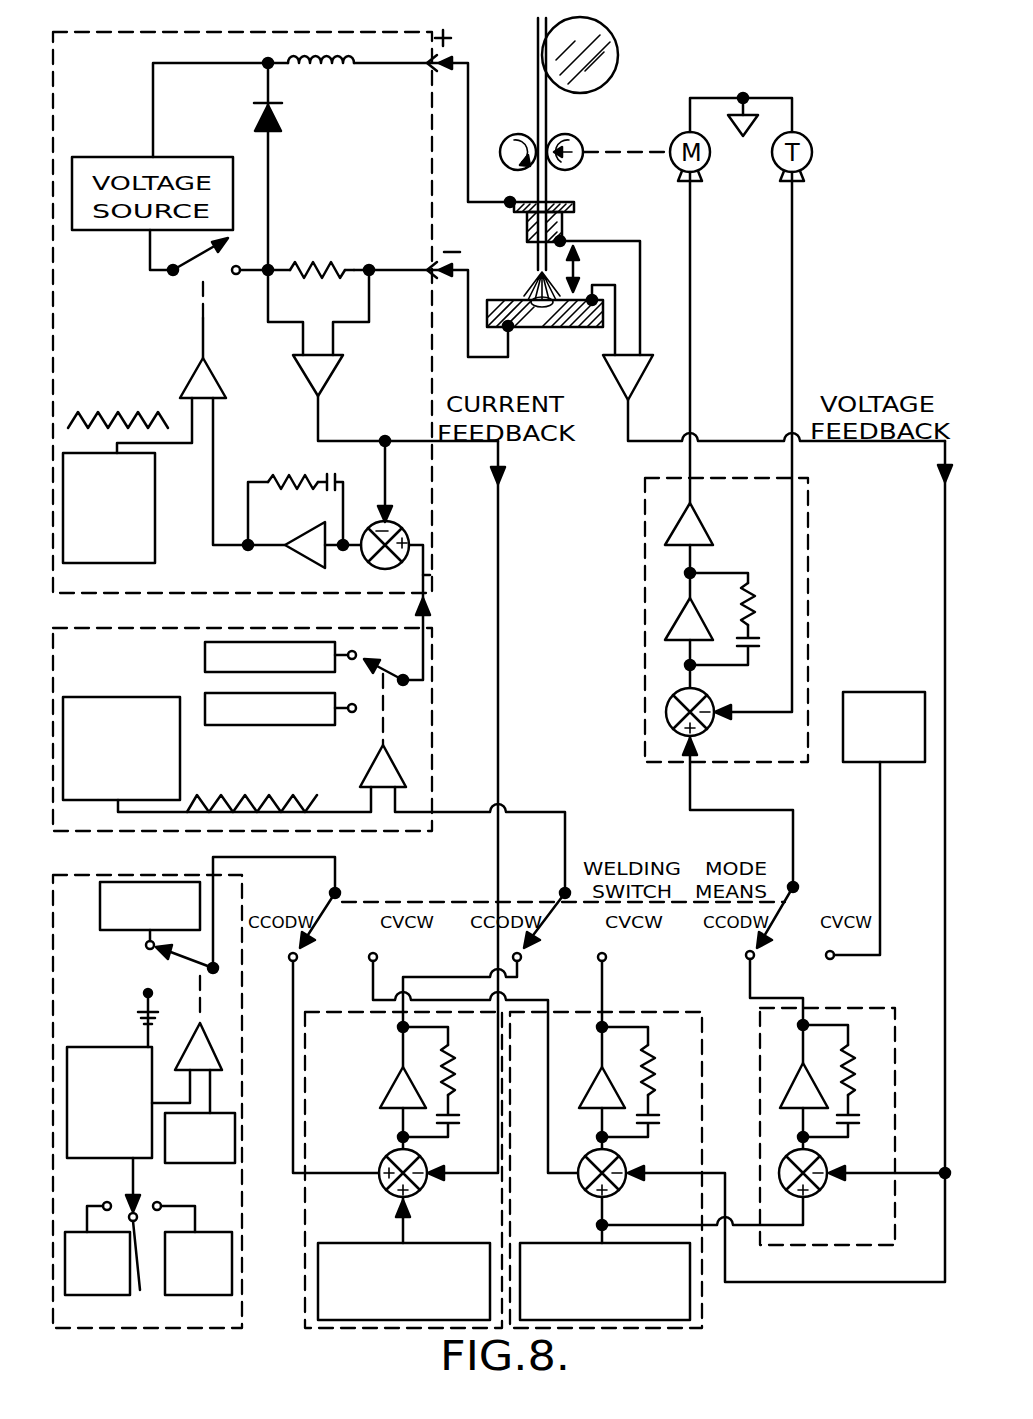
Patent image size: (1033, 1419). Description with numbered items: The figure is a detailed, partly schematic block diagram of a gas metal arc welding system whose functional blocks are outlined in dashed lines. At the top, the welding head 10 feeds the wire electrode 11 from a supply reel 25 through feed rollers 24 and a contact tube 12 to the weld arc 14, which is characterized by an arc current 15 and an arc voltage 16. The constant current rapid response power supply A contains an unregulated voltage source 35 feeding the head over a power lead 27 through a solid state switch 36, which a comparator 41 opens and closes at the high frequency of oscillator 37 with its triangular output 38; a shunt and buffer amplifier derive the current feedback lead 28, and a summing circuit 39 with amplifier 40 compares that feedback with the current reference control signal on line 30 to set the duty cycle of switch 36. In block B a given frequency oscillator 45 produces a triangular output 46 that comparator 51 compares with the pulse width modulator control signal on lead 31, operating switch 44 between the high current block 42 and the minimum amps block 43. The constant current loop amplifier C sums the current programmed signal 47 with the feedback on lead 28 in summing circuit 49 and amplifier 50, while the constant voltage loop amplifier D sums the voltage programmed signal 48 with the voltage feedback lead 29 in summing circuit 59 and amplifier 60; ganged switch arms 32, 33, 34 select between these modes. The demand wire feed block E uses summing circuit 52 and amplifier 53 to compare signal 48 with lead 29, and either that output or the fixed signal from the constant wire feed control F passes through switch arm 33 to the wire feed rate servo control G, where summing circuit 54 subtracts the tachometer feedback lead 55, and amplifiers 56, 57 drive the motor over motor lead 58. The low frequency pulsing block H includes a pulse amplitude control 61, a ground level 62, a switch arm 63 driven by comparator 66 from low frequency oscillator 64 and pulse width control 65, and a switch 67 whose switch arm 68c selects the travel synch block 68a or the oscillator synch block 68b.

The welding head 10 is at (522, 70).
The feed wire material 11 is at (537, 260).
The contact tube 12 is at (562, 226).
The weld arc 14 is at (528, 292).
The arc current 15 is at (385, 254).
The arc voltage 16 is at (580, 266).
The feed rollers 24 is at (510, 136).
The supply reel 25 is at (617, 45).
The power lead 27 is at (433, 316).
The current feedback lead 28 is at (500, 518).
The voltage feedback lead 29 is at (943, 512).
The current reference control signal line 30 is at (430, 575).
The pulse width modulator control signal lead 31 is at (525, 810).
The switch arm 32 is at (560, 920).
The switch arm 33 is at (780, 920).
The switch arm 34 is at (320, 920).
The unregulated voltage source 35 is at (233, 165).
The solid state switch 36 is at (150, 258).
The high frequency oscillator 37 is at (155, 523).
The triangular output 38 is at (78, 418).
The summing circuit 39 is at (404, 526).
The amplifier 40 is at (306, 538).
The comparator 41 is at (190, 380).
The 400 amps block 42 is at (205, 655).
The minimum amps block 43 is at (250, 725).
The switch 44 is at (395, 672).
The given frequency oscillator 45 is at (100, 697).
The triangular output 46 is at (200, 797).
The current programmed signal 47 is at (318, 1290).
The voltage programmed signal 48 is at (690, 1300).
The summing circuit 49 is at (383, 1188).
The amplifier 50 is at (393, 1083).
The comparator 51 is at (400, 765).
The summing circuit 52 is at (818, 1186).
The amplifier 53 is at (793, 1086).
The summing circuit 54 is at (665, 712).
The tachometer feedback lead 55 is at (792, 302).
The amplifier 56 is at (680, 618).
The amplifier 57 is at (680, 522).
The motor lead 58 is at (690, 302).
The summing circuit 59 is at (588, 1190).
The amplifier 60 is at (592, 1083).
The pulse amplitude control 61 is at (128, 907).
The ground level 62 is at (150, 996).
The switch arm 63 is at (202, 938).
The low frequency oscillator 64 is at (78, 1048).
The pulse width control 65 is at (205, 1165).
The comparator 66 is at (210, 1045).
The switch 67 is at (128, 1172).
The travel synch block 68a is at (190, 1297).
The oscillator synch block 68b is at (110, 1297).
The switch arm 68c is at (141, 1264).
The constant current rapid response power supply A is at (52, 266).
The current reference control block B is at (53, 730).
The constant current loop amplifier C is at (350, 1330).
The constant voltage loop amplifier D is at (660, 1330).
The demand wire feed block E is at (840, 1247).
The constant wire feed control F is at (850, 765).
The wire feed rate servo control G is at (645, 540).
The low frequency pulsing block H is at (70, 1330).